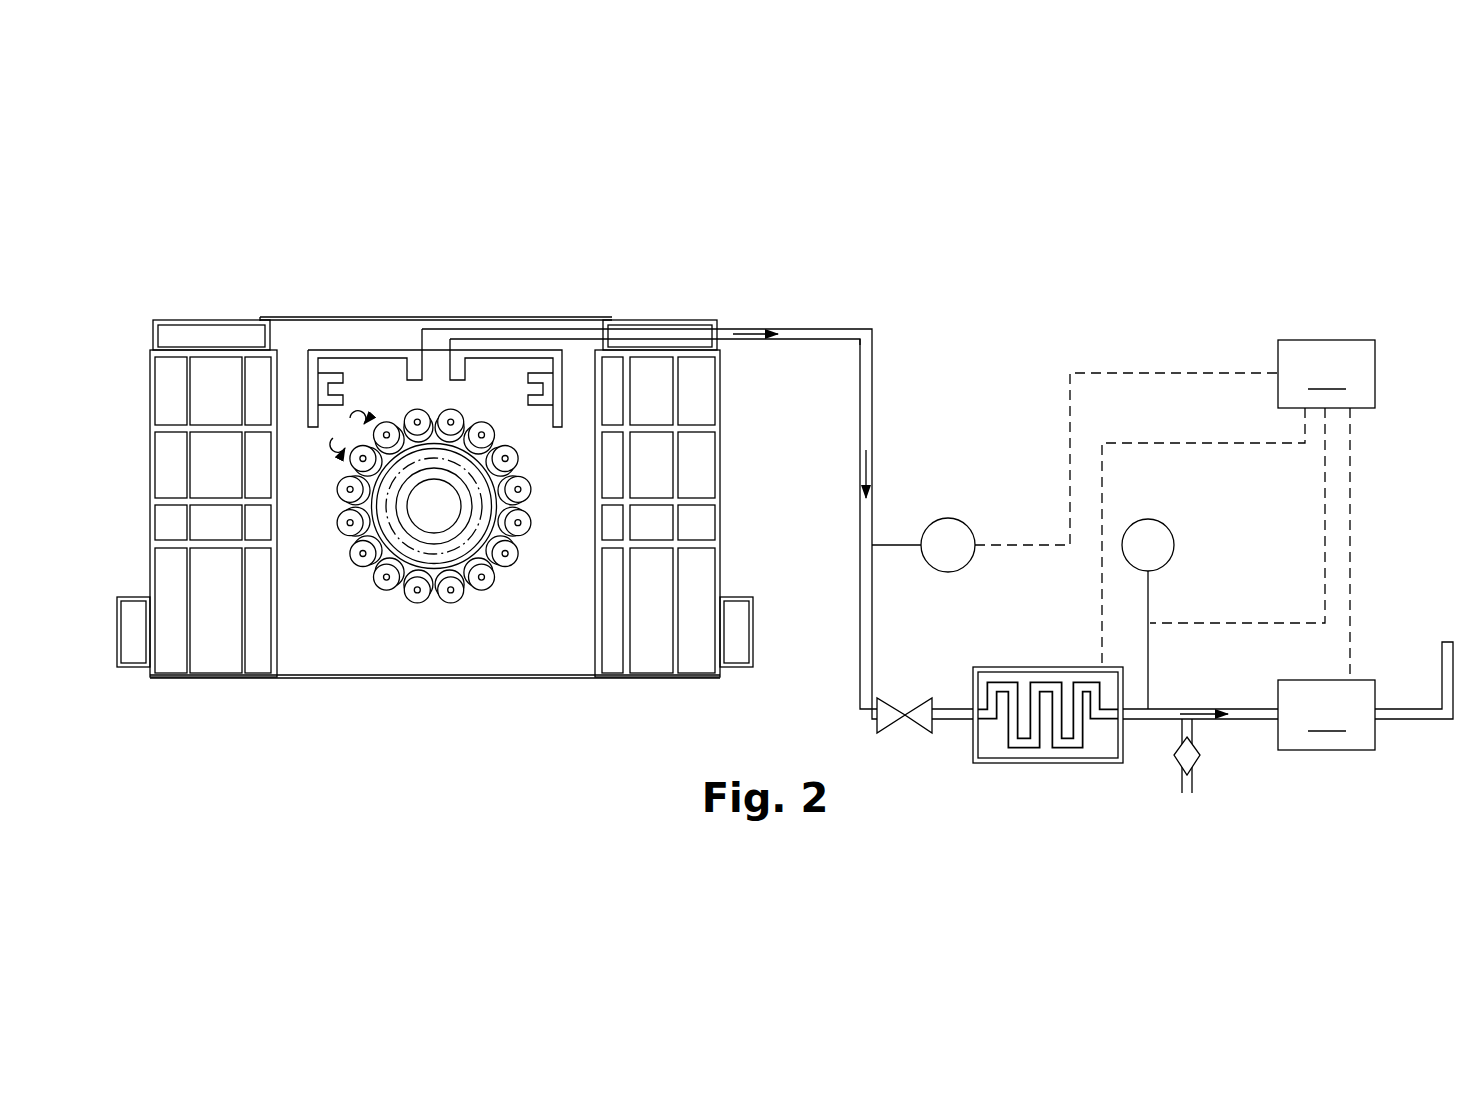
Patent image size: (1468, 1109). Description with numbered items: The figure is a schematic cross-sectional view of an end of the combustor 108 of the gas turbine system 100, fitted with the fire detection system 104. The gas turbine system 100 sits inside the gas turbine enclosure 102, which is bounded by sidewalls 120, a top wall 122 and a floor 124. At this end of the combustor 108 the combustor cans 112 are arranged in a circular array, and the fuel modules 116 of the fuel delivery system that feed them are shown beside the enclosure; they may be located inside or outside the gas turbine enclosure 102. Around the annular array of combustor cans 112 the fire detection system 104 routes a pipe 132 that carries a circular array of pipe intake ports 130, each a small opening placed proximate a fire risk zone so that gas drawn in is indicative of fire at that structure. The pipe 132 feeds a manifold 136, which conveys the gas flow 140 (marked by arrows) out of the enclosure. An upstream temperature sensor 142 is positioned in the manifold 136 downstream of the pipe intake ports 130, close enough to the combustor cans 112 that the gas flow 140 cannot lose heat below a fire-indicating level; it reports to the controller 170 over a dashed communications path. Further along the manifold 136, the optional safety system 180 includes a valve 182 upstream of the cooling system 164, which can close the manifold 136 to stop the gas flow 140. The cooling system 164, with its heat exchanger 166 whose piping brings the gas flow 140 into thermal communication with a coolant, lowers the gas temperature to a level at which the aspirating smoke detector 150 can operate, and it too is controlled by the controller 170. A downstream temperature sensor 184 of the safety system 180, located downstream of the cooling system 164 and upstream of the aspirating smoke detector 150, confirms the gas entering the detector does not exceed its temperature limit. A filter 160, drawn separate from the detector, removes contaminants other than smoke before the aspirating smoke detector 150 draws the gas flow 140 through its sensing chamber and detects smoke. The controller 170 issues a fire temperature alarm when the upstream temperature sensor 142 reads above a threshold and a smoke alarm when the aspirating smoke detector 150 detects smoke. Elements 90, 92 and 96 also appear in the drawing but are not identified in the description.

The bearing 90 is at (444, 563).
The rolling element 92 is at (522, 593).
The roller 96 is at (487, 578).
The gas turbine system 100 is at (362, 585).
The gas turbine enclosure 102 is at (468, 292).
The fire detection system 104 is at (950, 355).
The combustor 108 is at (385, 592).
The combustor cans 112 is at (444, 516).
The fuel modules 116 is at (218, 665).
The sidewalls 120 is at (444, 536).
The top wall 122 is at (556, 317).
The floor 124 is at (540, 675).
The pipe intake port 130 is at (457, 370).
The pipe 132 is at (315, 390).
The manifold 136 is at (826, 333).
The gas flow 140 is at (748, 330).
The upstream temperature sensor 142 is at (950, 540).
The aspirating smoke detector 150 is at (1326, 715).
The filter 160 is at (1198, 766).
The cooling system 164 is at (1048, 709).
The heat exchanger 166 is at (1052, 745).
The controller 170 is at (1238, 510).
The safety system 180 is at (1113, 553).
The valve 182 is at (920, 715).
The downstream temperature sensor 184 is at (1160, 548).